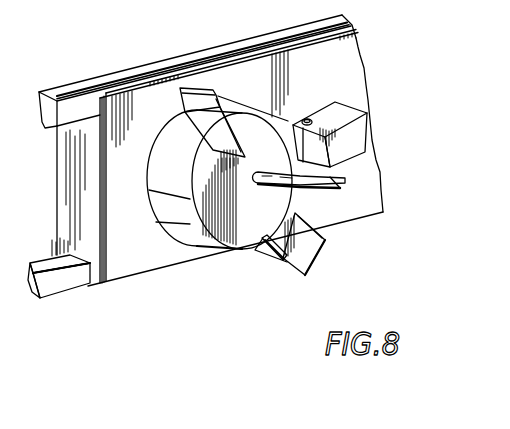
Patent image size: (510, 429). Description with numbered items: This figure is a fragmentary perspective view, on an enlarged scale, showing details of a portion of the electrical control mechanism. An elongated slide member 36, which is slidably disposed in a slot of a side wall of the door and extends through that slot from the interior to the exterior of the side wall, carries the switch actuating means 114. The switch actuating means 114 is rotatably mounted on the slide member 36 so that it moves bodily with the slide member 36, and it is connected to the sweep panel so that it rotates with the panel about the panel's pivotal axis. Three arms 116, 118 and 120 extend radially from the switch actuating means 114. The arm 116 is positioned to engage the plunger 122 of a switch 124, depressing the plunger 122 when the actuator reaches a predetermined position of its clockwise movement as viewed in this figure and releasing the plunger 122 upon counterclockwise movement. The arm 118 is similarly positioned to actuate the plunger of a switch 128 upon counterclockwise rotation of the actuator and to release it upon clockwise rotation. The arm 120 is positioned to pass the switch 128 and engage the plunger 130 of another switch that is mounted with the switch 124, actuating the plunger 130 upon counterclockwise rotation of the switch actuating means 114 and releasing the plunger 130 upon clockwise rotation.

The slide member 36 is at (355, 63).
The switch actuating means 114 is at (192, 247).
The arm 116 is at (199, 97).
The arm 118 is at (257, 255).
The arm 120 is at (318, 188).
The plunger 122 is at (308, 118).
The switch 124 is at (340, 98).
The switch 128 is at (308, 248).
The plunger 130 is at (340, 181).